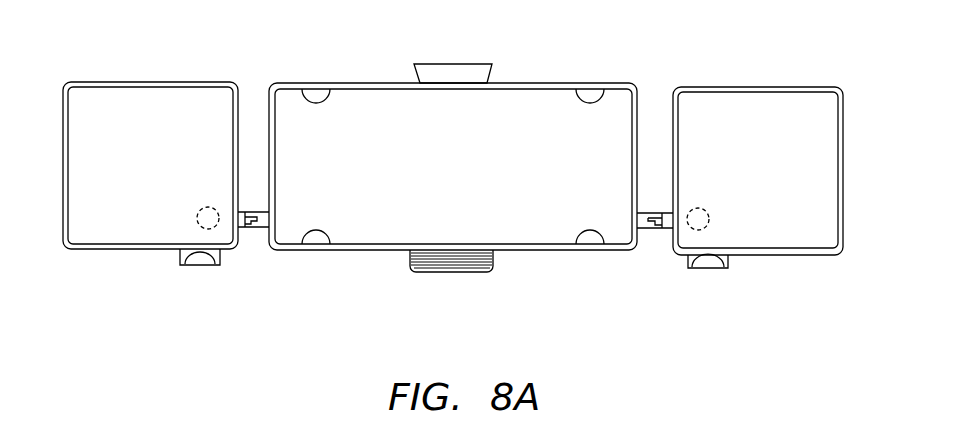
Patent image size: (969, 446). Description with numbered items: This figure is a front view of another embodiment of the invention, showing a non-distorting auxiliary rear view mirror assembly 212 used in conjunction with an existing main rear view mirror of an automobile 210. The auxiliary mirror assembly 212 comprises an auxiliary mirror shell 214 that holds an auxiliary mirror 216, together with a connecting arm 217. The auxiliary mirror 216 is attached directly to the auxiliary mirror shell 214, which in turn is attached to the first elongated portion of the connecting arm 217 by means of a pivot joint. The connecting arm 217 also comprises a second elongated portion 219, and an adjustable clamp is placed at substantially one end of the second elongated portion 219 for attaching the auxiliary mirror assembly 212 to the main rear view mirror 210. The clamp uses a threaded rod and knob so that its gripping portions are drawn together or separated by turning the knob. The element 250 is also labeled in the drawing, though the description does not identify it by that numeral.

The main rear view mirror of an automobile 210 is at (389, 266).
The auxiliary rear view mirror assembly 212 is at (175, 74).
The auxiliary mirror shell 214 is at (773, 87).
The auxiliary mirror 216 is at (126, 226).
The connecting arm 217 is at (236, 265).
The second elongated portion 219 is at (643, 230).
The hinge latch 250 is at (663, 230).